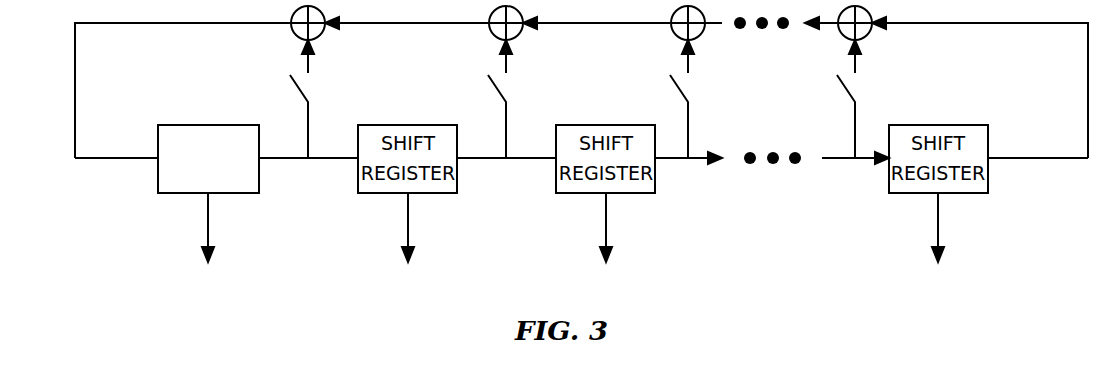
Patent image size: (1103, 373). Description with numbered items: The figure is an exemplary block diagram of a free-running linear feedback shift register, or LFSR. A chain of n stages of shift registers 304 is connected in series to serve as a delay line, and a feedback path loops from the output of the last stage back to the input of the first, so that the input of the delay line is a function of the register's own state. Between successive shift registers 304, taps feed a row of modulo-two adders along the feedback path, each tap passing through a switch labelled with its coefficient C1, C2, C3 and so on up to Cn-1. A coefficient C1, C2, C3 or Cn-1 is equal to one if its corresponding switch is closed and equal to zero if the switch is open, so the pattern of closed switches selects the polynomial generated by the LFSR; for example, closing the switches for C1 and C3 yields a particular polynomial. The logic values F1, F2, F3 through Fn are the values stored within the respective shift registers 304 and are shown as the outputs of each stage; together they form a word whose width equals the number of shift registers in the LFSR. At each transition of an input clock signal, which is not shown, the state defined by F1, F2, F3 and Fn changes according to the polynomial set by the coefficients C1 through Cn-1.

The shift register 304 is at (188, 125).
The coefficient c1 C1 is at (316, 99).
The coefficient c2 C2 is at (514, 99).
The coefficient c3 C3 is at (696, 99).
The coefficient cn-1 Cn-1 is at (873, 99).
The logic value F1 is at (207, 242).
The logic value F2 is at (407, 242).
The logic value F3 is at (605, 242).
The logic value Fn is at (938, 242).